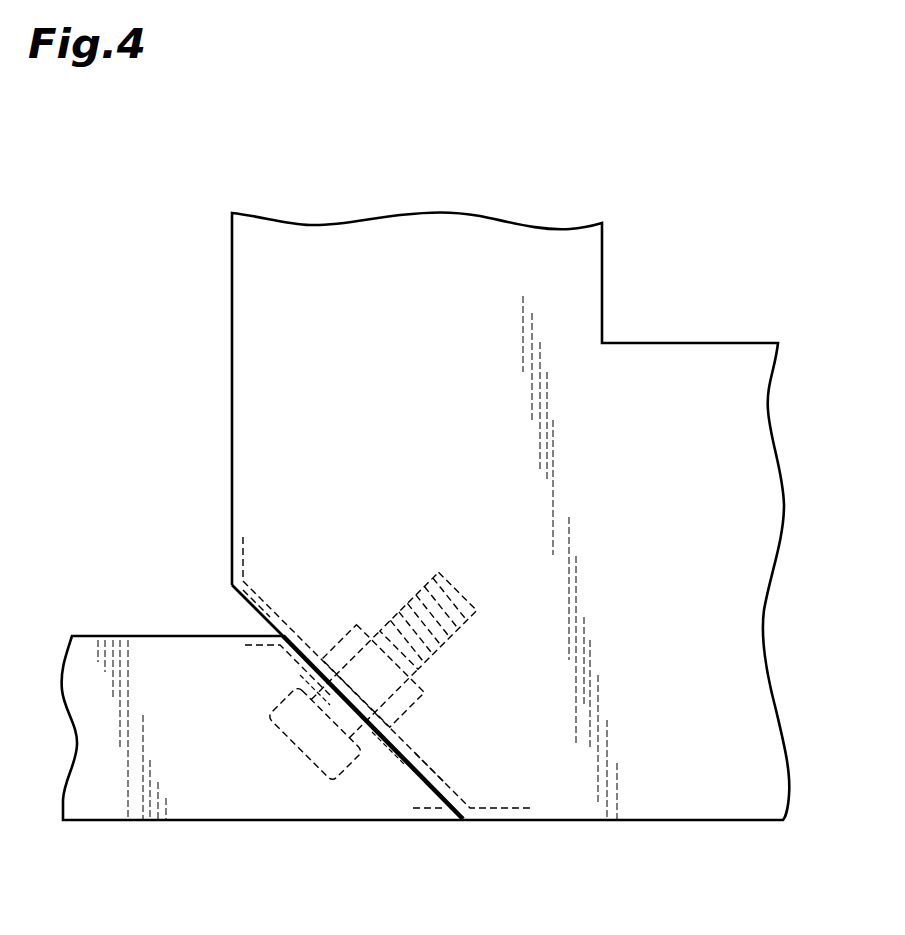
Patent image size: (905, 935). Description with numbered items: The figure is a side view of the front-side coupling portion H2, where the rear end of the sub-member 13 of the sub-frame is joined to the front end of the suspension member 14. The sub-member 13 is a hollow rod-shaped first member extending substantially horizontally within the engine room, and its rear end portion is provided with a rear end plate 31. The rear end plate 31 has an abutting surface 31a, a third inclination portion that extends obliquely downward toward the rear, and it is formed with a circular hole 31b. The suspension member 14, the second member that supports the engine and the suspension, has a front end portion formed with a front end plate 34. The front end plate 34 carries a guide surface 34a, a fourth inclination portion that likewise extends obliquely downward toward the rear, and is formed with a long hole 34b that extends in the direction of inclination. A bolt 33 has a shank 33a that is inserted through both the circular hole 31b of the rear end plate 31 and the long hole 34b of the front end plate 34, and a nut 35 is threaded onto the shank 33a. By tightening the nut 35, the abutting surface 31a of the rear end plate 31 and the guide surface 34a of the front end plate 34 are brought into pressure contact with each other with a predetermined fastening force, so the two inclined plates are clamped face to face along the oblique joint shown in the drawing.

The sub-member 13 is at (188, 821).
The suspension member 14 is at (693, 821).
The rear end plate 31 is at (405, 775).
The abutting surface 31a is at (397, 745).
The circular hole 31b is at (300, 682).
The bolt 33 is at (285, 742).
The shank 33a is at (393, 612).
The front end plate 34 is at (287, 613).
The guide surface 34a is at (270, 627).
The long hole 34b is at (425, 762).
The nut 35 is at (437, 697).
The front-side coupling portion H2 is at (358, 837).